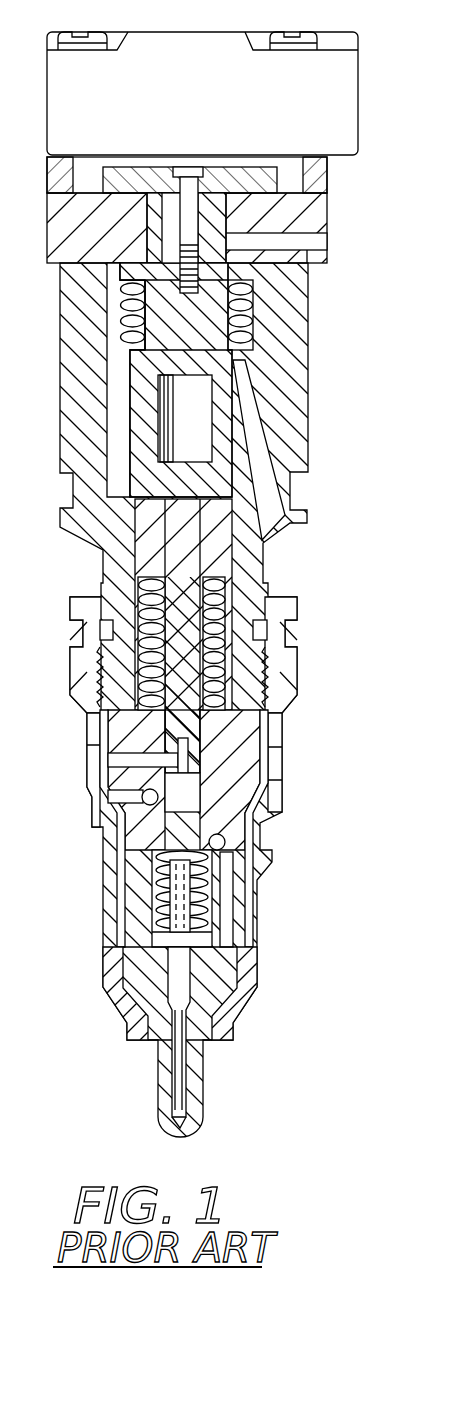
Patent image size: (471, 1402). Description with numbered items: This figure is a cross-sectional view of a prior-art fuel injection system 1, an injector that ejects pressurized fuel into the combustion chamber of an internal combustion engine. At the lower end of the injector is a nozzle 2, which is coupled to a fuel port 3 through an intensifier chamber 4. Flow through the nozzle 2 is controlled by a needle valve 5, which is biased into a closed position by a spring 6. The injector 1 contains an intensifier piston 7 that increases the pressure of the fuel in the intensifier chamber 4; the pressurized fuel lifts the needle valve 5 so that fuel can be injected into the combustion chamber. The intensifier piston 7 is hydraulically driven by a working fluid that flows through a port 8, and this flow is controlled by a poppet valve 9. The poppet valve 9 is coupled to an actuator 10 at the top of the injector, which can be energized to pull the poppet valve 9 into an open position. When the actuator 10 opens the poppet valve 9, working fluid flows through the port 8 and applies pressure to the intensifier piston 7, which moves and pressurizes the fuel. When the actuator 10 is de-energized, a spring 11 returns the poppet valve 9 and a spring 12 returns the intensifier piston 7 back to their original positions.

The fuel injection system 1 is at (306, 700).
The nozzle 2 is at (187, 1125).
The fuel port 3 is at (100, 768).
The intensifier chamber 4 is at (188, 795).
The needle valve 5 is at (187, 1067).
The spring 6 is at (207, 897).
The intensifier piston 7 is at (198, 743).
The port 8 is at (273, 523).
The poppet valve 9 is at (207, 368).
The actuator 10 is at (308, 104).
The spring 11 is at (250, 296).
The spring 12 is at (220, 643).